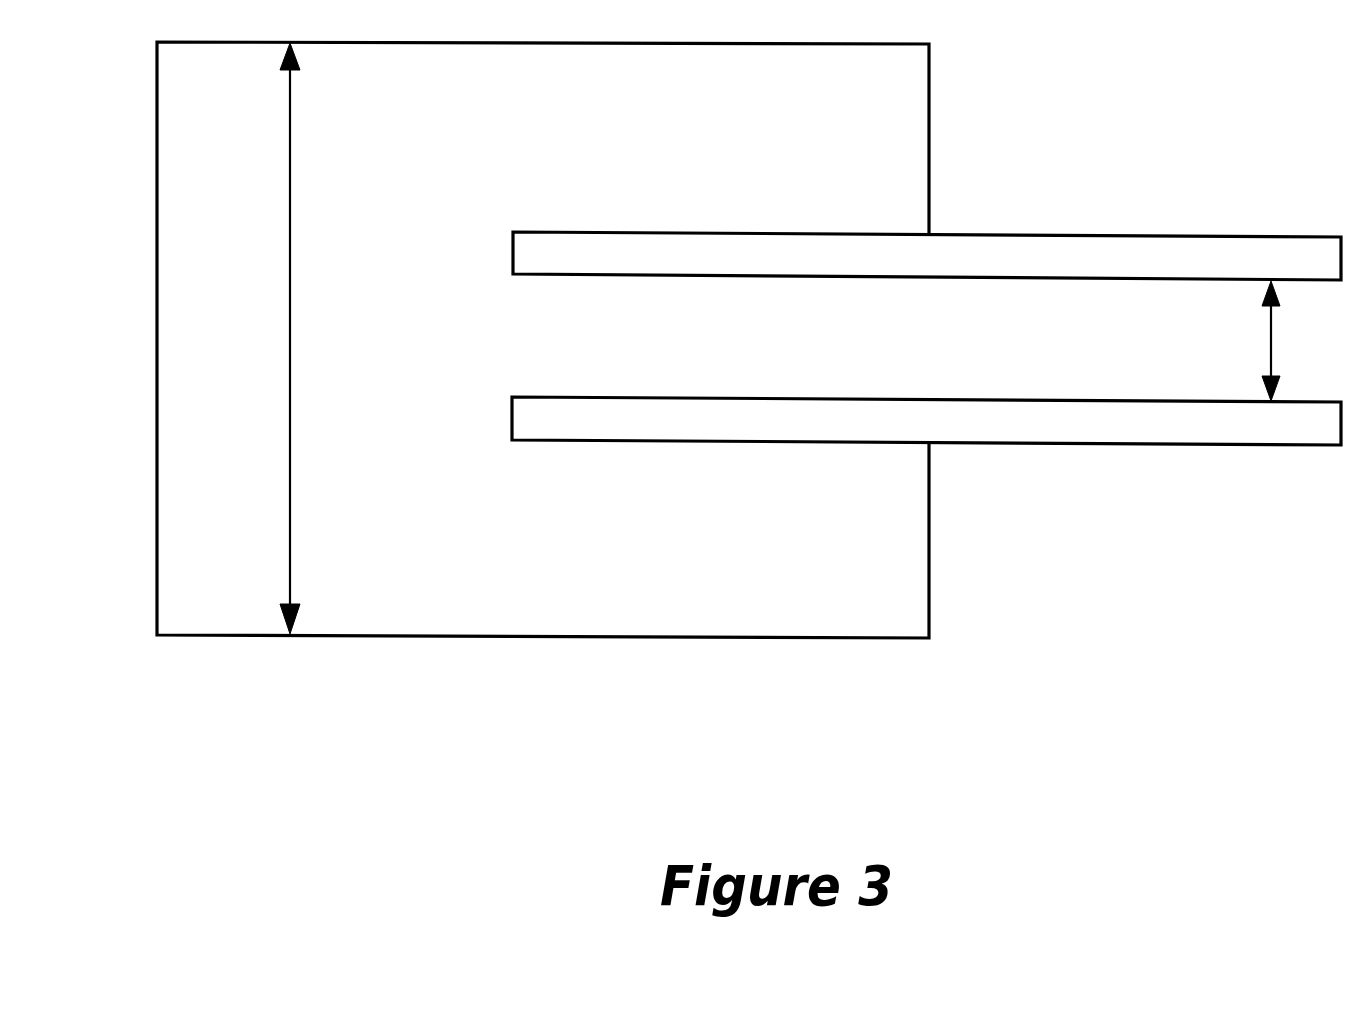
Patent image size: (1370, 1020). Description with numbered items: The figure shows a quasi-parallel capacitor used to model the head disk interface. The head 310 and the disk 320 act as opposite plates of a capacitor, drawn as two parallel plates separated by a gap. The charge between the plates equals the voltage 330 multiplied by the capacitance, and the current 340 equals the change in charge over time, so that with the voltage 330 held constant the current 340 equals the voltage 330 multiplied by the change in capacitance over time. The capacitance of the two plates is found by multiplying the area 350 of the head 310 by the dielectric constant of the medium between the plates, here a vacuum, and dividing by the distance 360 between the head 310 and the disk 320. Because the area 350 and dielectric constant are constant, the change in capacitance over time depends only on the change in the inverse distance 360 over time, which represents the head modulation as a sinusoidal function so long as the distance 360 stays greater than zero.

The head 310 is at (927, 241).
The disk 320 is at (926, 441).
The voltage 330 is at (322, 338).
The current 340 is at (543, 323).
The area 350 is at (967, 298).
The distance 360 is at (1296, 341).